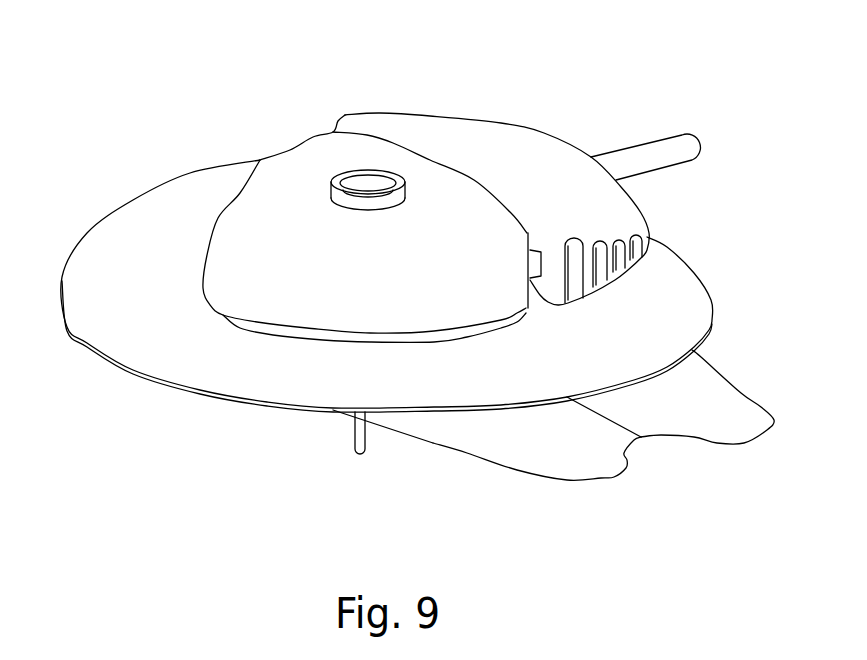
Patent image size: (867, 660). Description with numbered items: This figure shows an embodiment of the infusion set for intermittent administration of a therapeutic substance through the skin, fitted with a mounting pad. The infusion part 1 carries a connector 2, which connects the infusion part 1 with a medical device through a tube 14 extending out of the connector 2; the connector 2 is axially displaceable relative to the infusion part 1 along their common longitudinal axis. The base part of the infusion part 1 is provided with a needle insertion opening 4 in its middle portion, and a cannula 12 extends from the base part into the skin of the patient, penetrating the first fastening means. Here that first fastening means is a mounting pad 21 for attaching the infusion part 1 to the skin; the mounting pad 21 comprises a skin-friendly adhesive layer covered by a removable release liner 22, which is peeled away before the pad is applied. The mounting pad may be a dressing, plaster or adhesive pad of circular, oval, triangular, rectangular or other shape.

The infusion part 1 is at (303, 203).
The connector 2 is at (504, 142).
The needle insertion opening 4 is at (368, 195).
The cannula 12 is at (355, 450).
The tube 14 is at (667, 150).
The mounting pad 21 is at (213, 360).
The release liner 22 is at (536, 443).